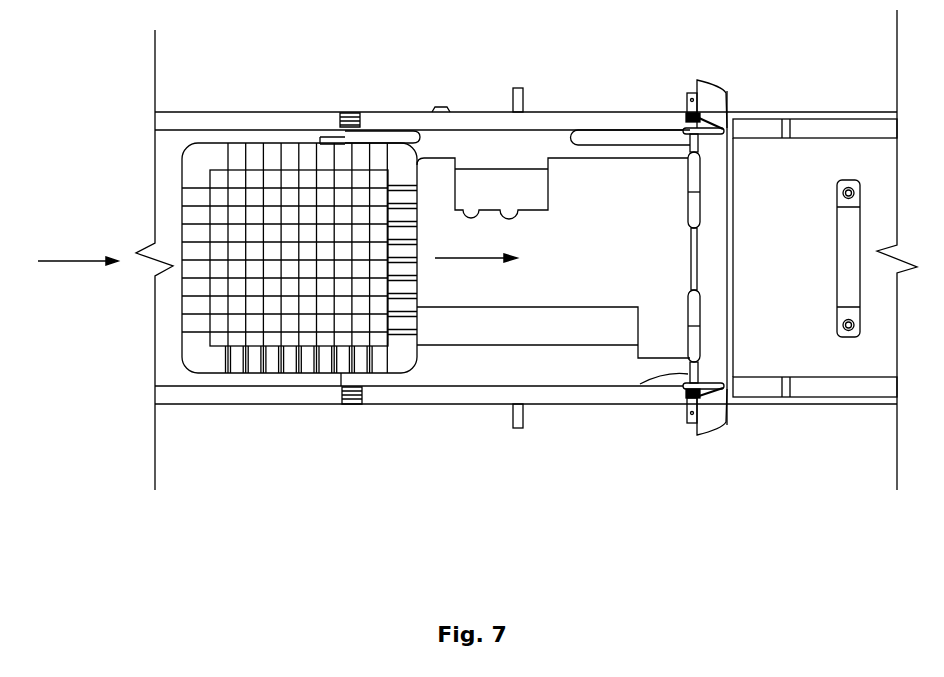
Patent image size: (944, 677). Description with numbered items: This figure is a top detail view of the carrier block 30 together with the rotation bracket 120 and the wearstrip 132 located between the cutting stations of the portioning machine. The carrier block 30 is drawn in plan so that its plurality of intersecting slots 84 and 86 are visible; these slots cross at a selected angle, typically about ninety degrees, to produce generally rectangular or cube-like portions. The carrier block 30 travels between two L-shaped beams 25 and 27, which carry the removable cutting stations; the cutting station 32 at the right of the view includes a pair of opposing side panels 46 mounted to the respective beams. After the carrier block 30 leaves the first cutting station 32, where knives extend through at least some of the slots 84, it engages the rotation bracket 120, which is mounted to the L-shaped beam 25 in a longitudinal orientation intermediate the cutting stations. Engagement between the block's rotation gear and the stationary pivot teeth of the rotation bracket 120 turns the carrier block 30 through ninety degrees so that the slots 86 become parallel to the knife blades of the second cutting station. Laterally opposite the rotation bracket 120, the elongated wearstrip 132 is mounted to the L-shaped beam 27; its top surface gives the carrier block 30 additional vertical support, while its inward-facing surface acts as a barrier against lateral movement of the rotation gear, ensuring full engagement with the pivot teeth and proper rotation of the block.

The L-shaped beam 25 is at (487, 121).
The L-shaped beam 27 is at (477, 396).
The carrier block 30 is at (206, 155).
The slots 84 is at (183, 222).
The slots 86 is at (279, 150).
The rotation bracket 120 is at (529, 147).
The wearstrip 132 is at (563, 320).
The cutting station 32 is at (838, 406).
The side panels 46 is at (832, 131).